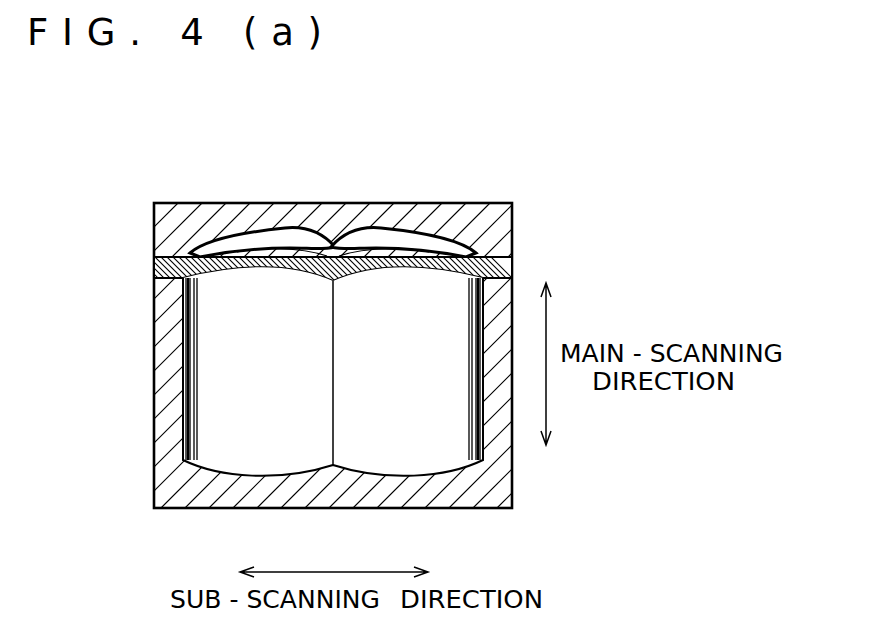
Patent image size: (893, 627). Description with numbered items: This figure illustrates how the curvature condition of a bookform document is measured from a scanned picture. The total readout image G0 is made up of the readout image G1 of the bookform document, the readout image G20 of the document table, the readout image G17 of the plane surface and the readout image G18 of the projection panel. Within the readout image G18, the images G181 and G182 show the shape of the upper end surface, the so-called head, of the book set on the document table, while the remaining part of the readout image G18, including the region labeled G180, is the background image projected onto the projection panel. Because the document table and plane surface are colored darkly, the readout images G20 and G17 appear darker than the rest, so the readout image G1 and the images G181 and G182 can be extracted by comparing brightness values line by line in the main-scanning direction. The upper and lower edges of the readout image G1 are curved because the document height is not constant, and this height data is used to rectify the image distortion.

The total readout image G0 is at (470, 203).
The readout image of the bookform document G1 is at (380, 460).
The readout image of the plane surface G17 is at (155, 270).
The readout image of the projection panel G18 is at (318, 172).
The first layer G180 is at (215, 207).
The image of the upper end surface of the bookform document G181 is at (293, 223).
The image of the upper end surface of the bookform document G182 is at (334, 193).
The readout image of the document table G20 is at (483, 493).